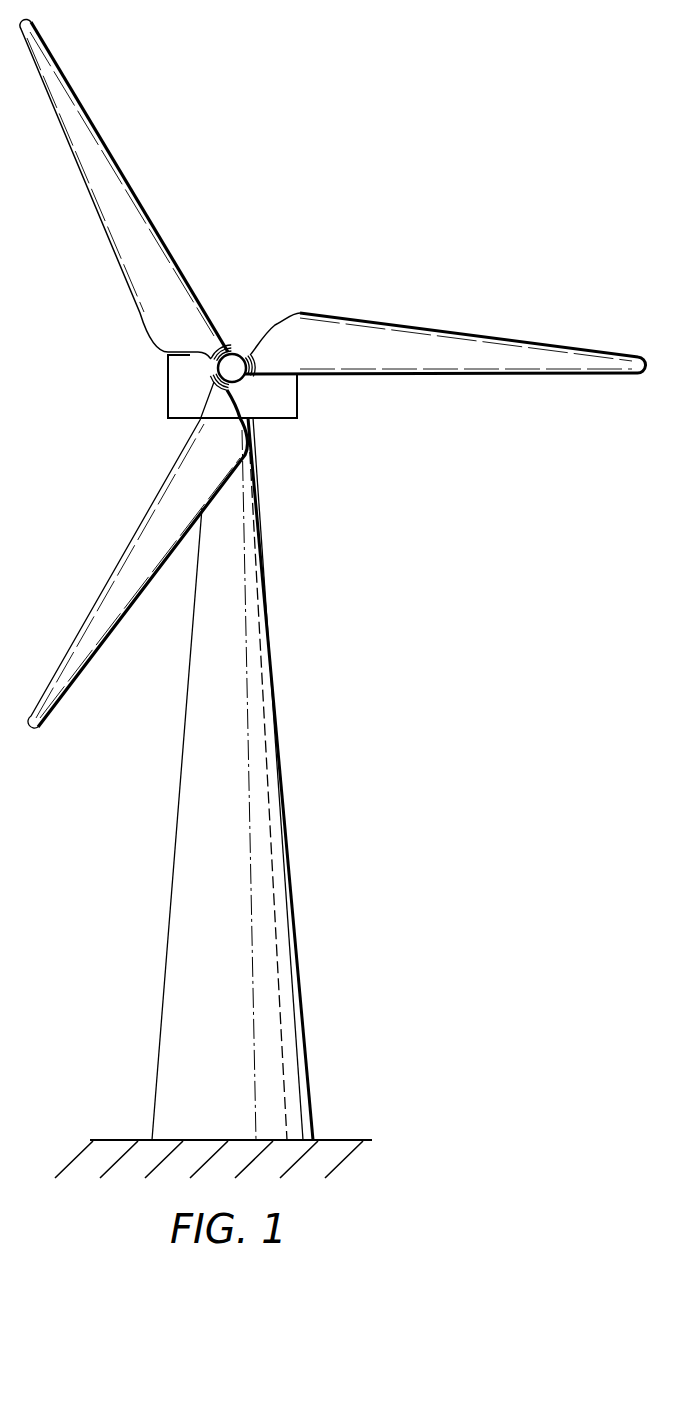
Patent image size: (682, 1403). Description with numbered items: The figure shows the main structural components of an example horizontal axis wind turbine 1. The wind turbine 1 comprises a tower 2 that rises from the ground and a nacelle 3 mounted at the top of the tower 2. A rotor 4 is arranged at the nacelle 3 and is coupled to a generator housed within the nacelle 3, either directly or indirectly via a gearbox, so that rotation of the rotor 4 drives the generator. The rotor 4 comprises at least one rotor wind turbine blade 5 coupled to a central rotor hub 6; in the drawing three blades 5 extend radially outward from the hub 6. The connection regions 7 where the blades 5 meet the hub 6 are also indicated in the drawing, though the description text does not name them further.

The wind turbine 1 is at (427, 881).
The tower 2 is at (277, 790).
The nacelle 3 is at (290, 402).
The rotor 4 is at (331, 189).
The rotor wind turbine blade 5 is at (77, 142).
The central rotor hub 6 is at (235, 360).
The blade root / pitch bearing 7 is at (215, 330).